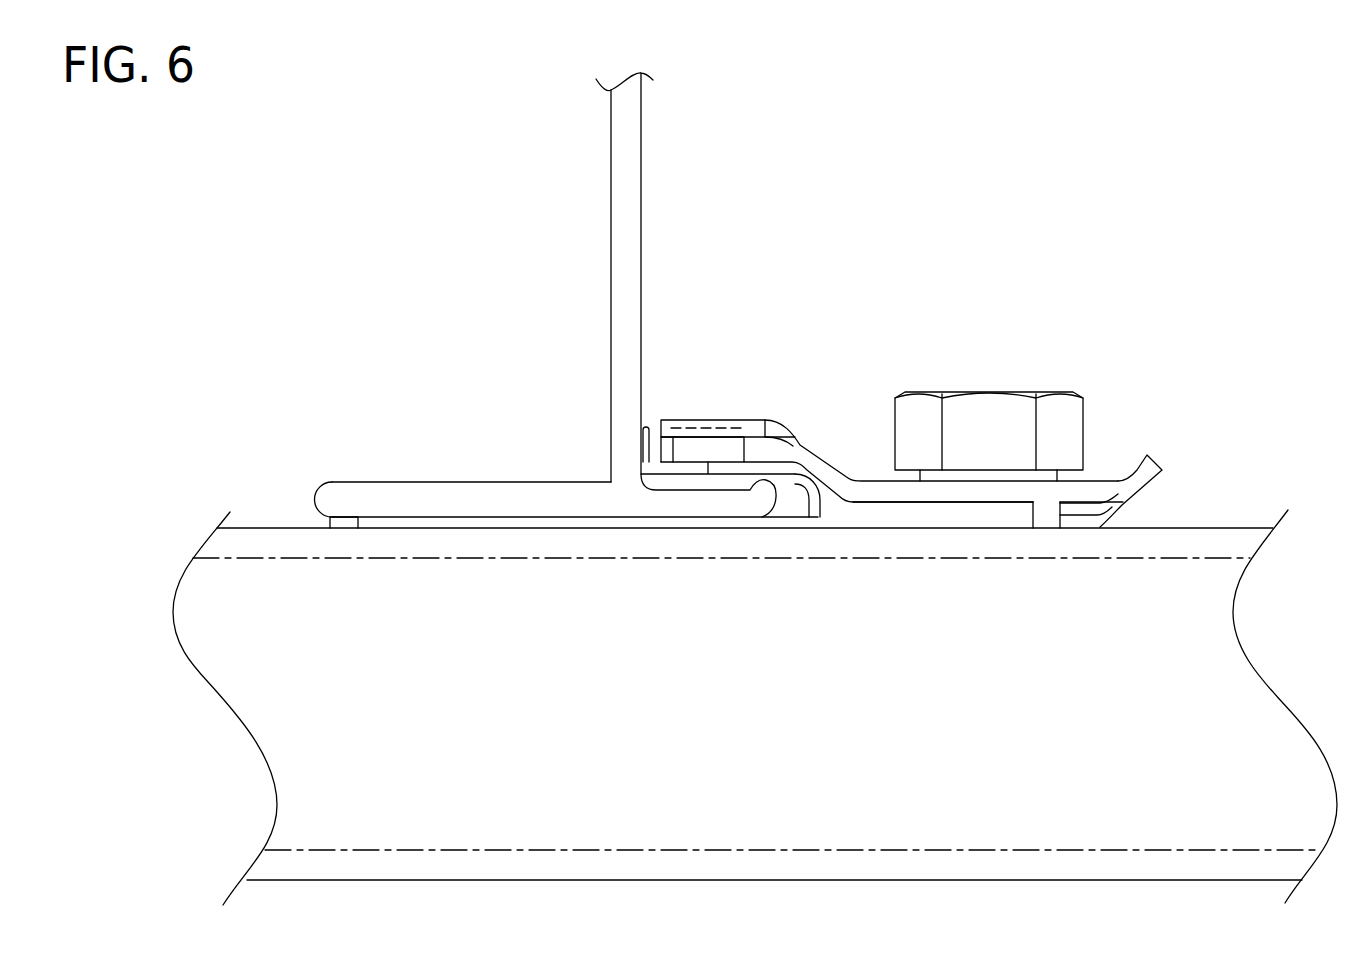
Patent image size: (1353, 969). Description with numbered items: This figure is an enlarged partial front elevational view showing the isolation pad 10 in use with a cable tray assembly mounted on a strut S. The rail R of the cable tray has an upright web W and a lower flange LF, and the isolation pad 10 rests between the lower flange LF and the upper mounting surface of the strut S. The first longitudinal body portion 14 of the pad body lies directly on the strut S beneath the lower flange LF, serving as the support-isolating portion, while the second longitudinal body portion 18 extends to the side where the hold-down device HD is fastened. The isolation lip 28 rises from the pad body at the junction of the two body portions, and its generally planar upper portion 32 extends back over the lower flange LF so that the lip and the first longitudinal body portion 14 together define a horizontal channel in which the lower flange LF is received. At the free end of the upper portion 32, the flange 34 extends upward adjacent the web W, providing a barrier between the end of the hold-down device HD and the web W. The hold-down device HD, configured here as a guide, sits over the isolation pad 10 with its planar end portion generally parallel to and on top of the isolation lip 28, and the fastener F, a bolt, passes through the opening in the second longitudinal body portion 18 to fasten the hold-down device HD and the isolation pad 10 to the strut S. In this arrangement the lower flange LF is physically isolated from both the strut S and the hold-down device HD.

The isolation pad 10 is at (911, 503).
The first longitudinal body portion 14 is at (478, 520).
The second longitudinal body portion 18 is at (893, 512).
The isolation lip 28 is at (728, 450).
The upper portion 32 is at (714, 472).
The flange 34 is at (650, 437).
The rail R is at (567, 295).
The web W is at (641, 221).
The lower flange LF is at (432, 482).
The hold-down device HD is at (822, 458).
The fastener F is at (1010, 392).
The strut S is at (848, 716).